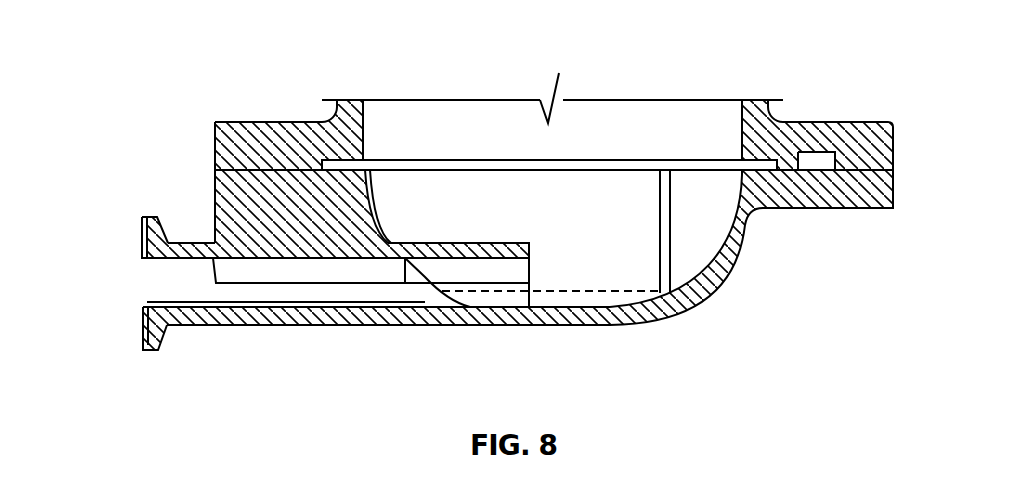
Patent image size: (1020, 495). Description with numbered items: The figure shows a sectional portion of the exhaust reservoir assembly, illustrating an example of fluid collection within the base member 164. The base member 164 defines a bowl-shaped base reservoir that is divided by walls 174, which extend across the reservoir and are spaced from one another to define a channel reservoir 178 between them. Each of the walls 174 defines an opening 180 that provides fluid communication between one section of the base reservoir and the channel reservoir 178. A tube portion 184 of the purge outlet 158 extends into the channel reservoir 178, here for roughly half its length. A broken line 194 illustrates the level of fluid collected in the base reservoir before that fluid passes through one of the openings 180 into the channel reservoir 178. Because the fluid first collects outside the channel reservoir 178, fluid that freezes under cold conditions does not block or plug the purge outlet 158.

The purge outlet 158 is at (140, 347).
The base member 164 is at (688, 303).
The walls 174 is at (698, 192).
The channel reservoir 178 is at (473, 221).
The opening 180 is at (658, 198).
The tube portion 184 is at (307, 322).
The broken line 194 is at (618, 290).